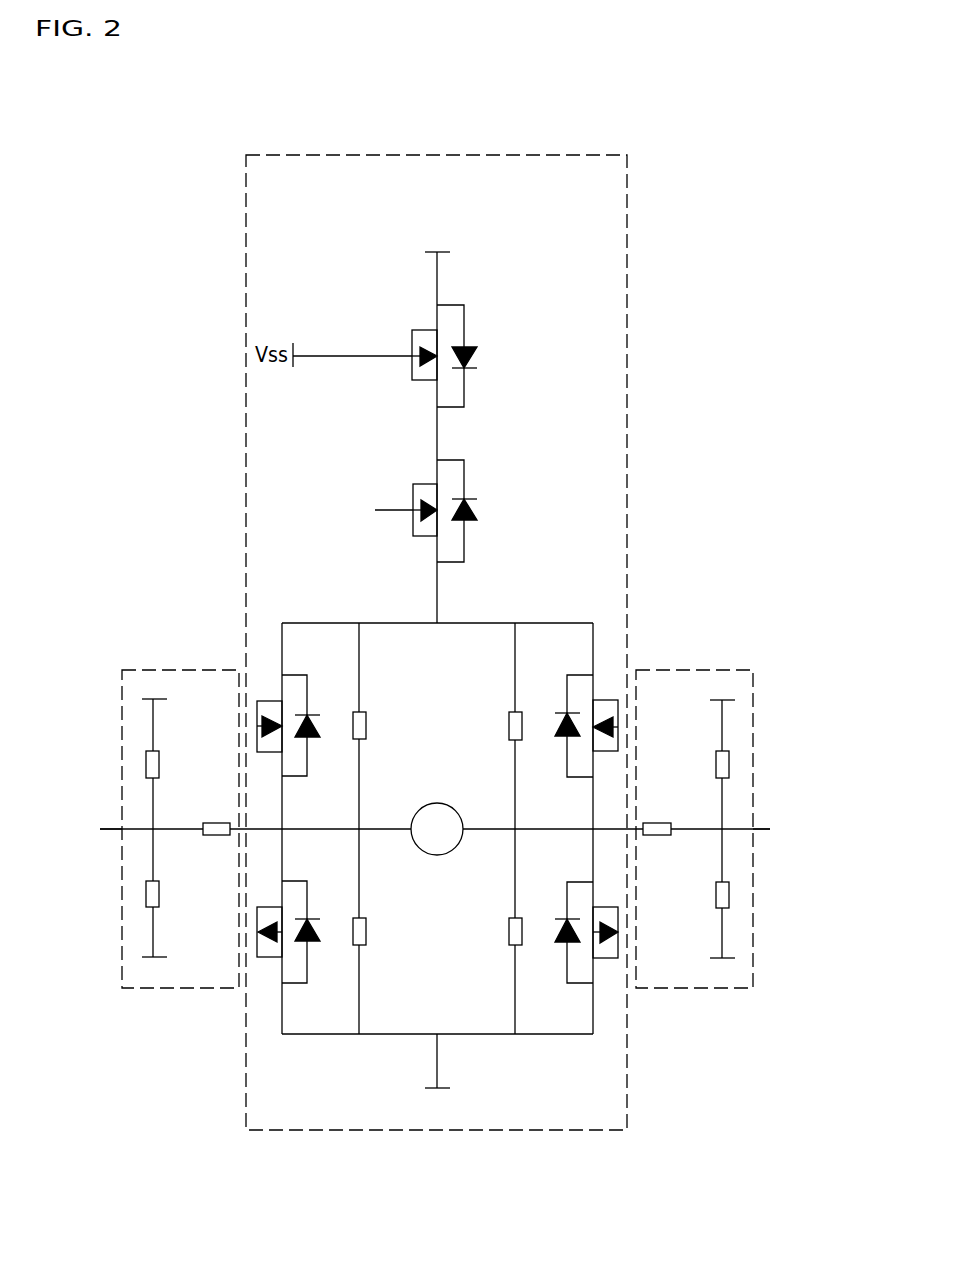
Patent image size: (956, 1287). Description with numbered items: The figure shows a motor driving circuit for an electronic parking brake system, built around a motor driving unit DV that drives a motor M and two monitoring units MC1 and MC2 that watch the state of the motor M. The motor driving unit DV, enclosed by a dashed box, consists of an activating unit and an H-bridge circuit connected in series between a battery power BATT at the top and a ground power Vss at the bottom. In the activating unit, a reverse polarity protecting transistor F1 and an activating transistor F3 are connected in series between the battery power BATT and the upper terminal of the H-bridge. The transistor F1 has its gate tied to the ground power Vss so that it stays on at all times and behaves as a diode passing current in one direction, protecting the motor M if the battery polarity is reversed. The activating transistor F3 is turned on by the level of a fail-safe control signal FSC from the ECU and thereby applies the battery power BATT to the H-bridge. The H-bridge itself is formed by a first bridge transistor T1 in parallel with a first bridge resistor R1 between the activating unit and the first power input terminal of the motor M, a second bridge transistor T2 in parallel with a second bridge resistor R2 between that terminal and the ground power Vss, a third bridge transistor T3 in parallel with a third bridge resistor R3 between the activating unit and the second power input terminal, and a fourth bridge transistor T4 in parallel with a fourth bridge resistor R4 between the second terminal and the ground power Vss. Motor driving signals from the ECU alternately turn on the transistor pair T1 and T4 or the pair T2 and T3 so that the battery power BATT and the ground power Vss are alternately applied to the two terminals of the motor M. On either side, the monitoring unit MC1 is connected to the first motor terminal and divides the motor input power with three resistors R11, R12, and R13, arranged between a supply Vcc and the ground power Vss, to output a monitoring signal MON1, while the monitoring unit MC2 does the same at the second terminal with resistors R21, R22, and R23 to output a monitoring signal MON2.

The motor driving unit DV is at (558, 155).
The monitoring unit MC1 is at (178, 668).
The monitoring unit MC2 is at (695, 668).
The battery power BATT is at (437, 263).
The reverse polarity protecting transistor F1 is at (439, 381).
The activating transistor F3 is at (440, 540).
The fail-safe control signal FSC is at (365, 511).
The ground power Vss is at (435, 1076).
The supply voltage terminal Vcc is at (152, 712).
The first bridge transistor T1 is at (287, 723).
The second bridge transistor T2 is at (287, 934).
The third bridge transistor T3 is at (589, 725).
The fourth bridge transistor T4 is at (588, 934).
The first bridge resistor R1 is at (372, 726).
The second bridge resistor R2 is at (372, 932).
The third bridge resistor R3 is at (502, 726).
The fourth bridge resistor R4 is at (502, 932).
The resistor R11 is at (170, 764).
The resistor R12 is at (172, 894).
The resistor R13 is at (217, 816).
The resistor R21 is at (704, 764).
The resistor R22 is at (703, 895).
The resistor R23 is at (657, 842).
The motor M is at (437, 829).
The monitoring signal MON1 is at (84, 831).
The monitoring signal MON2 is at (792, 831).